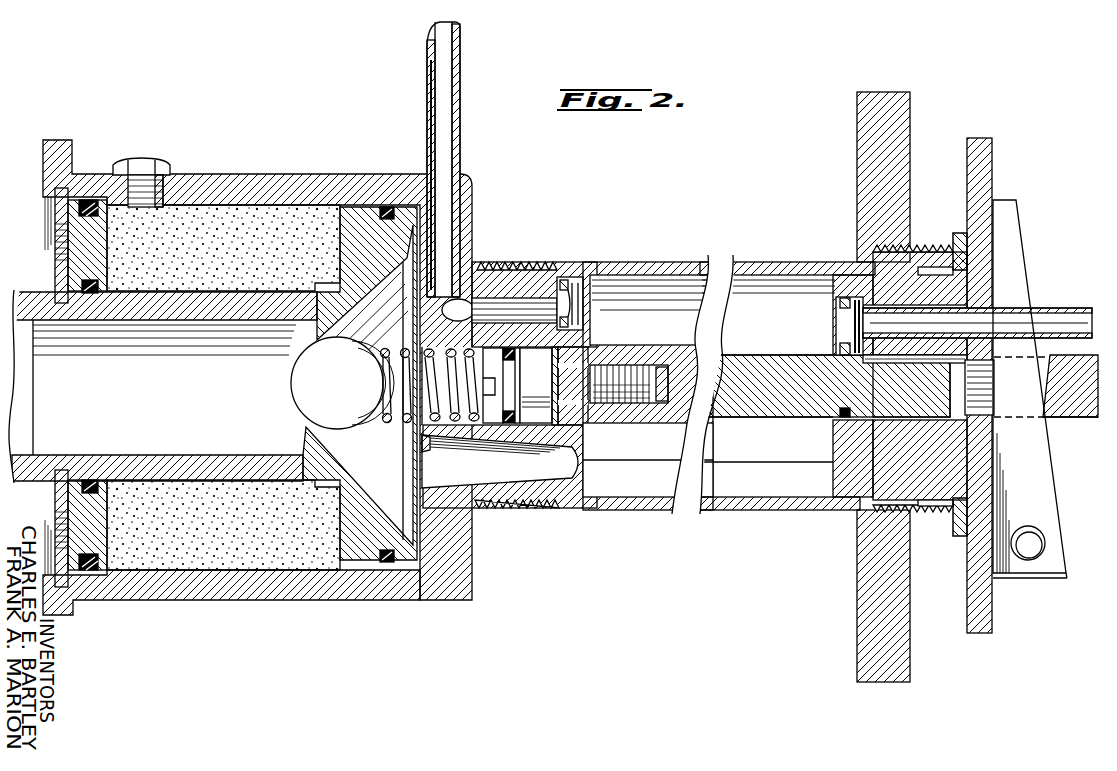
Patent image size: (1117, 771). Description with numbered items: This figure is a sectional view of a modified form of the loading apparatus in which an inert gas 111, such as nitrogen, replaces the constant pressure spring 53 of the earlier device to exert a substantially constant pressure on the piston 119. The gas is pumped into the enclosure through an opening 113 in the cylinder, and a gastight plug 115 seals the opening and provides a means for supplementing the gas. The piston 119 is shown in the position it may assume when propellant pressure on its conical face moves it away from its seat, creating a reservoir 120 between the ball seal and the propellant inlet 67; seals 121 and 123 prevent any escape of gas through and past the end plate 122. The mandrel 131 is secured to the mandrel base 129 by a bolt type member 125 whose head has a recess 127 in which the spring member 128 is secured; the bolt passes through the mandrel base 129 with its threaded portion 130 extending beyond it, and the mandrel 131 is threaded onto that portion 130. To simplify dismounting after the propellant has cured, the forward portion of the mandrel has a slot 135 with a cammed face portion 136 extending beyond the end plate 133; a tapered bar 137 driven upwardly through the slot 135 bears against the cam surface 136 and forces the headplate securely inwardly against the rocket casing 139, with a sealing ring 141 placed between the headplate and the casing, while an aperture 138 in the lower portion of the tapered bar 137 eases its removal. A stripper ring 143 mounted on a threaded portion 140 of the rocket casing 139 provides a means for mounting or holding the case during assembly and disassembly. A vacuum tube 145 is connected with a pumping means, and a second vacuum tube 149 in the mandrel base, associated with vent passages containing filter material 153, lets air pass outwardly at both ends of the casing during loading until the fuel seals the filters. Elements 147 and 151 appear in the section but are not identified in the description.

The constant pressure spring 53 is at (386, 423).
The propellant inlet 67 is at (477, 508).
The inert gas 111 is at (268, 217).
The opening 113 is at (167, 200).
The gastight plug 115 is at (147, 158).
The piston 119 is at (368, 213).
The reservoir 120 is at (412, 556).
The seal 121 is at (86, 200).
The end plate 122 is at (95, 200).
The seal 123 is at (84, 287).
The bolt type member 125 is at (542, 435).
The recess 127 is at (505, 437).
The spring member 128 is at (507, 347).
The mandrel base 129 is at (584, 440).
The threaded portion 130 is at (636, 368).
The mandrel 131 is at (668, 340).
The end plate 133 is at (993, 167).
The slot 135 is at (1050, 358).
The cammed face portion 136 is at (1055, 418).
The tapered bar 137 is at (1058, 492).
The aperture 138 is at (1040, 560).
The rocket casing 139 is at (783, 264).
The threaded portion 140 is at (918, 247).
The sealing ring 141 is at (960, 233).
The stripper ring 143 is at (860, 156).
The vacuum tube 145 is at (1046, 308).
The bearing 147 is at (850, 320).
The second vacuum tube 149 is at (460, 148).
The sleeve 151 is at (517, 292).
The filter material 153 is at (572, 277).